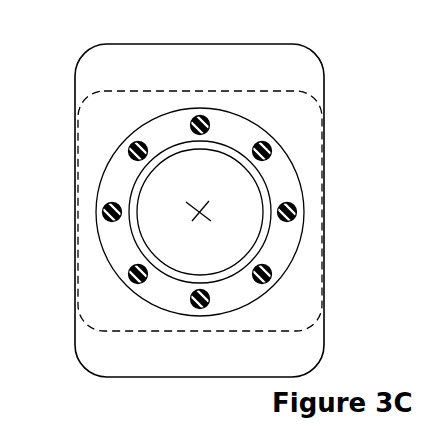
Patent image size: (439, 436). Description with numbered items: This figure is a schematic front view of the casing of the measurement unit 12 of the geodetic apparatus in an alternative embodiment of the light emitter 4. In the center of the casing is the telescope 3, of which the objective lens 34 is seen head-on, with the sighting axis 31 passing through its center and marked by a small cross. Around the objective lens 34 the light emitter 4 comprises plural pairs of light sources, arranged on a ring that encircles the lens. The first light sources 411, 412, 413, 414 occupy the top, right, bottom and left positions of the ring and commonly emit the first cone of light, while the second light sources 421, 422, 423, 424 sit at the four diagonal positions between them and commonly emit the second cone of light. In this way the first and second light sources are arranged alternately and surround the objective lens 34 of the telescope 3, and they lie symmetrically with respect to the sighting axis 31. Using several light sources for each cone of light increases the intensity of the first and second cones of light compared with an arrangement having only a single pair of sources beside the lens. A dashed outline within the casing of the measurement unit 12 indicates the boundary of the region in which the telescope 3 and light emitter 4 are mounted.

The measurement unit 12 is at (323, 103).
The telescope 3 is at (228, 148).
The light emitter 4 is at (283, 146).
The objective lens 34 is at (241, 196).
The sighting axis 31 is at (201, 212).
The first light source 411 is at (201, 116).
The first light source 412 is at (298, 213).
The first light source 413 is at (201, 310).
The first light source 414 is at (103, 213).
The second light source 421 is at (273, 152).
The second light source 422 is at (270, 283).
The second light source 423 is at (139, 285).
The second light source 424 is at (136, 150).